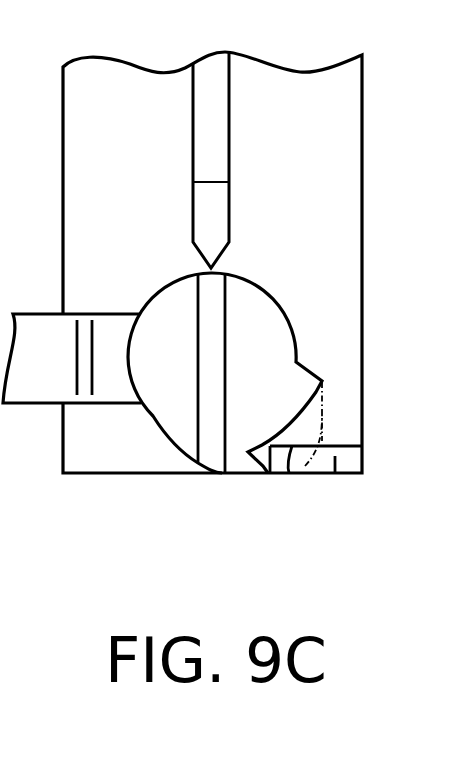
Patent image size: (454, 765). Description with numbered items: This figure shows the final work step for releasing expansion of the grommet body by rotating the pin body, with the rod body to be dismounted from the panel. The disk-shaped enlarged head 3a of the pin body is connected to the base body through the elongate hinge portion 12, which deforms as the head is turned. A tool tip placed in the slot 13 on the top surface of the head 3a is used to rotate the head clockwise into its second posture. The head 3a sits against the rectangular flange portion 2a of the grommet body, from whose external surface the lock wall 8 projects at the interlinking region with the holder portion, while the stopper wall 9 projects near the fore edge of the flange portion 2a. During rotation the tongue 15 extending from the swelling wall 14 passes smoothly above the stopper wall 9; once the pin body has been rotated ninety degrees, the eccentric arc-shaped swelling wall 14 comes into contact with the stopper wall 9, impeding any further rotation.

The flange portion 2a is at (335, 108).
The lock wall 8 is at (213, 210).
The enlarged head 3a is at (175, 413).
The slot 13 is at (217, 453).
The hinge portion 12 is at (37, 386).
The swelling wall 14 is at (290, 455).
The stopper wall 9 is at (333, 457).
The tongue 15 is at (320, 418).